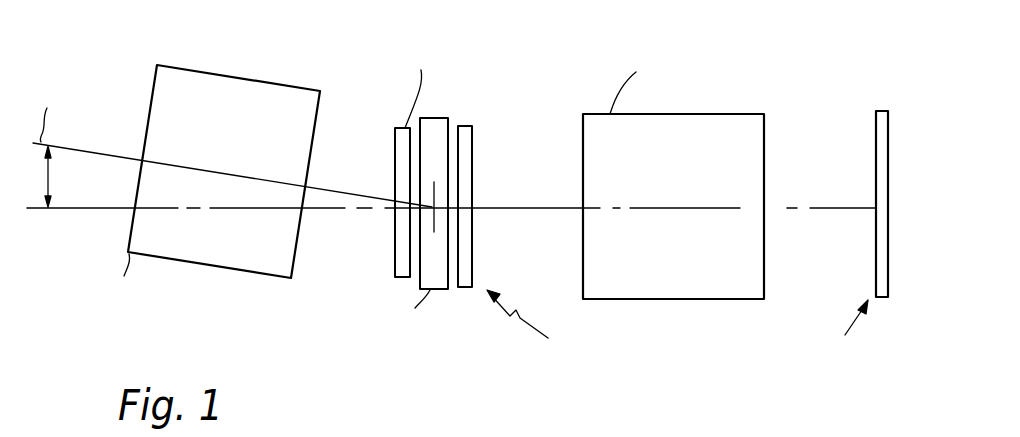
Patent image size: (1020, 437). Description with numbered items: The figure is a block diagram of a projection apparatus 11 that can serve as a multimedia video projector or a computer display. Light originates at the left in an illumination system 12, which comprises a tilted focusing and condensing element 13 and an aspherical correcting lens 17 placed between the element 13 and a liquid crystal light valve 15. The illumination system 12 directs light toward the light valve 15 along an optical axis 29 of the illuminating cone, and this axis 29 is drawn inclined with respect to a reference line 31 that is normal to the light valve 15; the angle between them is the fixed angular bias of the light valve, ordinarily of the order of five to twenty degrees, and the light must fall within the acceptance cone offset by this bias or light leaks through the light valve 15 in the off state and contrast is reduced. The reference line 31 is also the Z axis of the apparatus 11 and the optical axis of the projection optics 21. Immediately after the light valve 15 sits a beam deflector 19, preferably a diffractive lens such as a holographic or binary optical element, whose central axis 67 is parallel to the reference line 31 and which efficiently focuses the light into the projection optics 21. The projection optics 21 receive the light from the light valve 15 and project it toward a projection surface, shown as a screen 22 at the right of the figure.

The projection apparatus 11 is at (562, 101).
The illumination system 12 is at (400, 93).
The focusing and condensing element 13 is at (291, 280).
The liquid crystal light valve 15 is at (443, 118).
The aspherical correcting lens 17 is at (395, 263).
The beam deflector 19 is at (473, 125).
The projection optics 21 is at (764, 158).
The screen 22 is at (877, 117).
The optical axis 29 is at (120, 155).
The reference line 31 is at (555, 207).
The central axis 67 is at (467, 289).